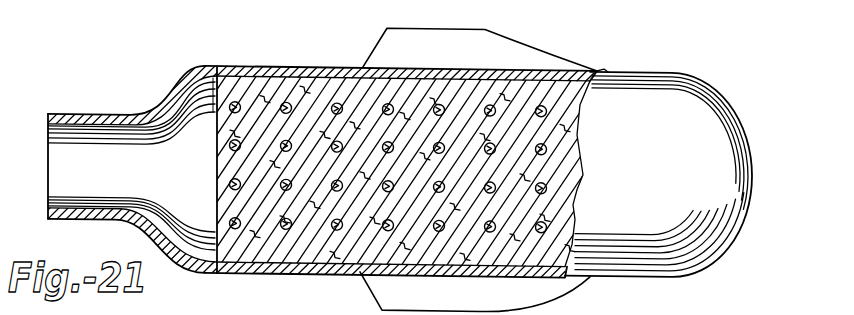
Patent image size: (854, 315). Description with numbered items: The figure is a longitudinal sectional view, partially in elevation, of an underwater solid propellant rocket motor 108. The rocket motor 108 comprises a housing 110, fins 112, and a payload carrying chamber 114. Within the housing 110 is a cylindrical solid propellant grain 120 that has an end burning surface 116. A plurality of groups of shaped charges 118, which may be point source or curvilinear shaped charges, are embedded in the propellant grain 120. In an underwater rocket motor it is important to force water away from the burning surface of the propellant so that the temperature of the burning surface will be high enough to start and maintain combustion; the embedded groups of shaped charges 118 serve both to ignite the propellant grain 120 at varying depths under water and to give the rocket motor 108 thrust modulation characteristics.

The underwater solid propellant rocket motor 108 is at (611, 62).
The housing 110 is at (327, 67).
The fins 112 is at (456, 53).
The payload carrying chamber 114 is at (672, 68).
The end burning surface 116 is at (206, 75).
The shaped charges 118 is at (234, 101).
The propellant grain 120 is at (328, 256).